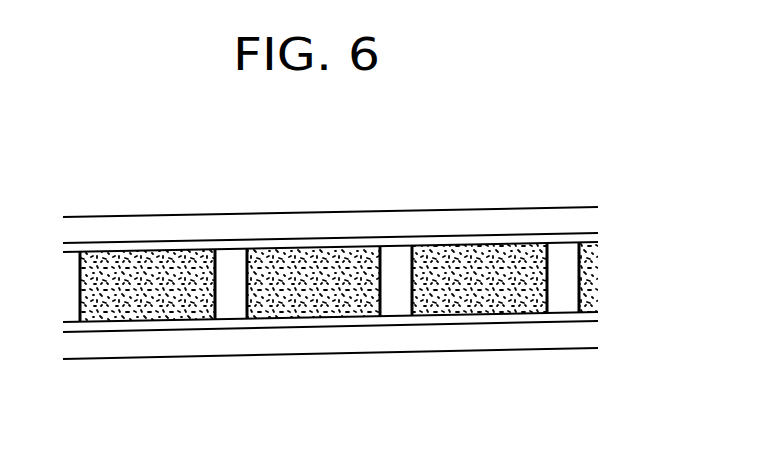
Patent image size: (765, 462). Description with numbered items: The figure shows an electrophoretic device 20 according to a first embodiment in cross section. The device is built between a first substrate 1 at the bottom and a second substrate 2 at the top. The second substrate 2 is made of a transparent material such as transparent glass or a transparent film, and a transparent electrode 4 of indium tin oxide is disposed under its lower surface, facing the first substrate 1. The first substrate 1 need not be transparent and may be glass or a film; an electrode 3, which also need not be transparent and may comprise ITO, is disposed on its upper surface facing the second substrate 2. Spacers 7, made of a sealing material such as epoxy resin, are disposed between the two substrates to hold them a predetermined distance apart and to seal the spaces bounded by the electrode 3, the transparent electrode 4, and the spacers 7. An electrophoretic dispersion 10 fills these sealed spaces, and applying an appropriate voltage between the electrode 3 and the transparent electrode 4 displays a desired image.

The first substrate 1 is at (146, 347).
The second substrate 2 is at (110, 232).
The electrode 3 is at (232, 328).
The transparent electrode 4 is at (230, 250).
The spacers 7 is at (397, 263).
The electrophoretic dispersion 10 is at (467, 262).
The electrophoretic device 20 is at (531, 208).